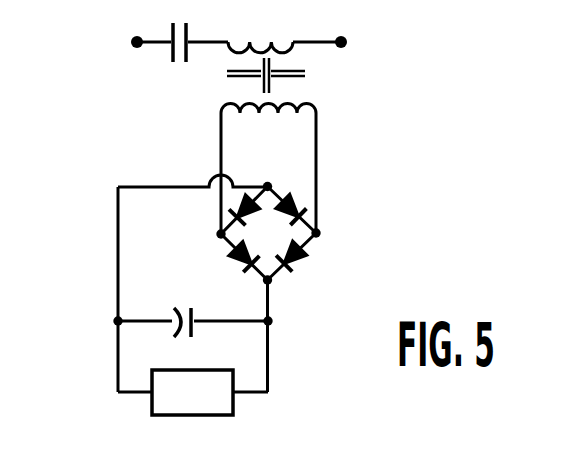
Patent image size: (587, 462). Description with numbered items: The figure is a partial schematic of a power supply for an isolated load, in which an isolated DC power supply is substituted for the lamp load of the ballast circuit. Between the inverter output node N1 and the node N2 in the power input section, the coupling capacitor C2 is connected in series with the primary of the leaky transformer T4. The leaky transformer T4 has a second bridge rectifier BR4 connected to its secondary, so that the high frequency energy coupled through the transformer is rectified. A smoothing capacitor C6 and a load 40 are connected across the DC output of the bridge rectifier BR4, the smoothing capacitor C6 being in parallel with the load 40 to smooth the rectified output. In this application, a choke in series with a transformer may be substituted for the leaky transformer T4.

The node N2 is at (126, 59).
The output node N1 is at (351, 58).
The coupling capacitor C2 is at (177, 58).
The leaky transformer T4 is at (268, 62).
The second bridge rectifier BR4 is at (319, 245).
The smoothing capacitor C6 is at (192, 307).
The load 40 is at (222, 415).